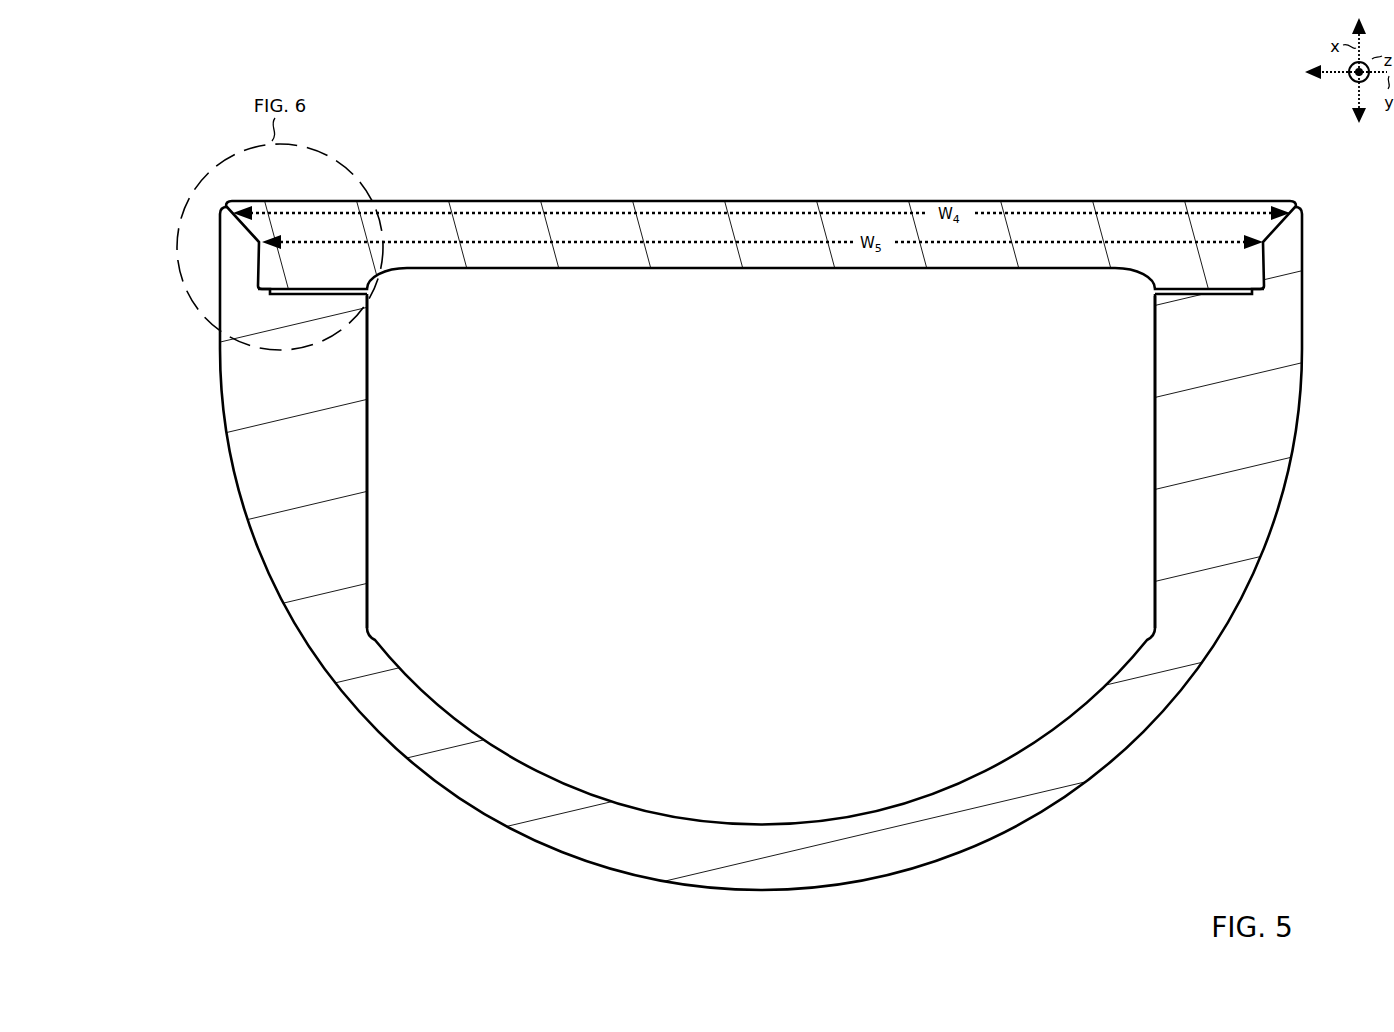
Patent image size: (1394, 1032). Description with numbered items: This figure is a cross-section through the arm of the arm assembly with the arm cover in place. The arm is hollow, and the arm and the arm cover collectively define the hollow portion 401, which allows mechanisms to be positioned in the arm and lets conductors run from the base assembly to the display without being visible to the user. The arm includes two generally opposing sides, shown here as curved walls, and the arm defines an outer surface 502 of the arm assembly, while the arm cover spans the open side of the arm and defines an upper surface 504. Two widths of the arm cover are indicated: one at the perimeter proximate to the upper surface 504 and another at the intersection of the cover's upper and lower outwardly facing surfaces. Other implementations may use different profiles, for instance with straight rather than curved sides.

The outer surface 502 is at (220, 339).
The upper surface 504 is at (761, 161).
The hollow portion 401 is at (617, 506).